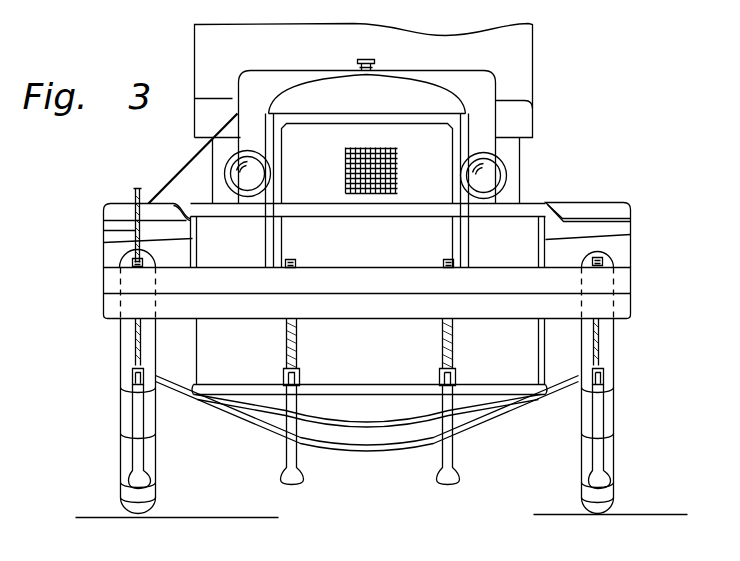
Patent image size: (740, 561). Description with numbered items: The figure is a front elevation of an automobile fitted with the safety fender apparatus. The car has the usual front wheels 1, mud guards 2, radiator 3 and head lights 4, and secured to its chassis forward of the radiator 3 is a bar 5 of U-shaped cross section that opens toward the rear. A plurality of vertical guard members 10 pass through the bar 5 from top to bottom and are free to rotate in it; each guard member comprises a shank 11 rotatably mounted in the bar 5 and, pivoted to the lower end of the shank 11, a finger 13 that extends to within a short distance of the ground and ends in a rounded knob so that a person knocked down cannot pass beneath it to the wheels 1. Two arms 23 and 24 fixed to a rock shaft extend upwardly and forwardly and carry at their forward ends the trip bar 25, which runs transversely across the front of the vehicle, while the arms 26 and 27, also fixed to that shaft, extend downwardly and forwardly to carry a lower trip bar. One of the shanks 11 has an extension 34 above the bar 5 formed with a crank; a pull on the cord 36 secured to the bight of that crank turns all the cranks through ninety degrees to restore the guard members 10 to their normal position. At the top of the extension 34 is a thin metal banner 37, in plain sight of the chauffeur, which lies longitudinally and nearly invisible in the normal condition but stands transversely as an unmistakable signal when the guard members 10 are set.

The front wheels 1 is at (120, 420).
The mud guards 2 is at (108, 203).
The radiator 3 is at (438, 144).
The head lights 4 is at (243, 175).
The bar 5 is at (623, 279).
The vertical guard members 10 is at (291, 258).
The shank 11 is at (138, 345).
The finger 13 is at (142, 456).
The arm 23 is at (103, 242).
The arm 24 is at (630, 234).
The trip bar 25 is at (333, 212).
The arm 26 is at (197, 350).
The arm 27 is at (539, 347).
The extension 34 is at (103, 230).
The cord 36 is at (183, 162).
The metal banner 37 is at (133, 187).